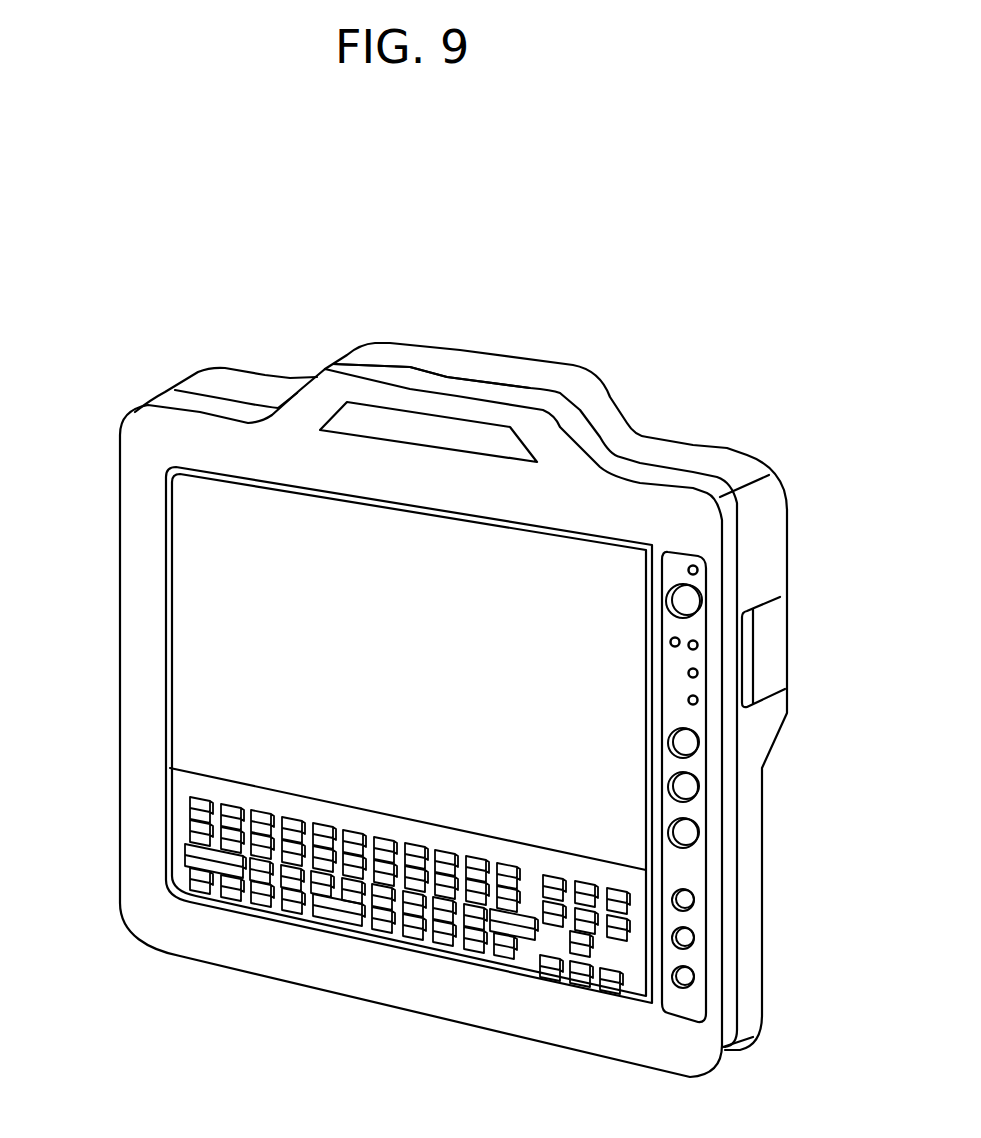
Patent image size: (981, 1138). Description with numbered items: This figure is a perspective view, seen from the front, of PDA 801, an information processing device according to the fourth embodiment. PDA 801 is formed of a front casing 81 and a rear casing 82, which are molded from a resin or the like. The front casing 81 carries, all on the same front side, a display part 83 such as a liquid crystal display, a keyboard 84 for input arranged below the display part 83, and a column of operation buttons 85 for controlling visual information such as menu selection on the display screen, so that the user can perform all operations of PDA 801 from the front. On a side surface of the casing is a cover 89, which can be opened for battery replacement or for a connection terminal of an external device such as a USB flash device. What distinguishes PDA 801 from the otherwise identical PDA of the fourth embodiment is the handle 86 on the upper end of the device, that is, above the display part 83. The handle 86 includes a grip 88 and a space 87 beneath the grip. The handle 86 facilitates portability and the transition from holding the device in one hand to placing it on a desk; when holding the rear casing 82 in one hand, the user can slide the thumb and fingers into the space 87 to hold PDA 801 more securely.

The PDA 801 is at (517, 301).
The front casing 81 is at (660, 473).
The rear casing 82 is at (748, 468).
The display part 83 is at (210, 593).
The keyboard 84 is at (185, 785).
The operation buttons 85 is at (686, 828).
The handle 86 is at (282, 262).
The space 87 is at (380, 417).
The grip 88 is at (460, 400).
The cover 89 is at (762, 657).